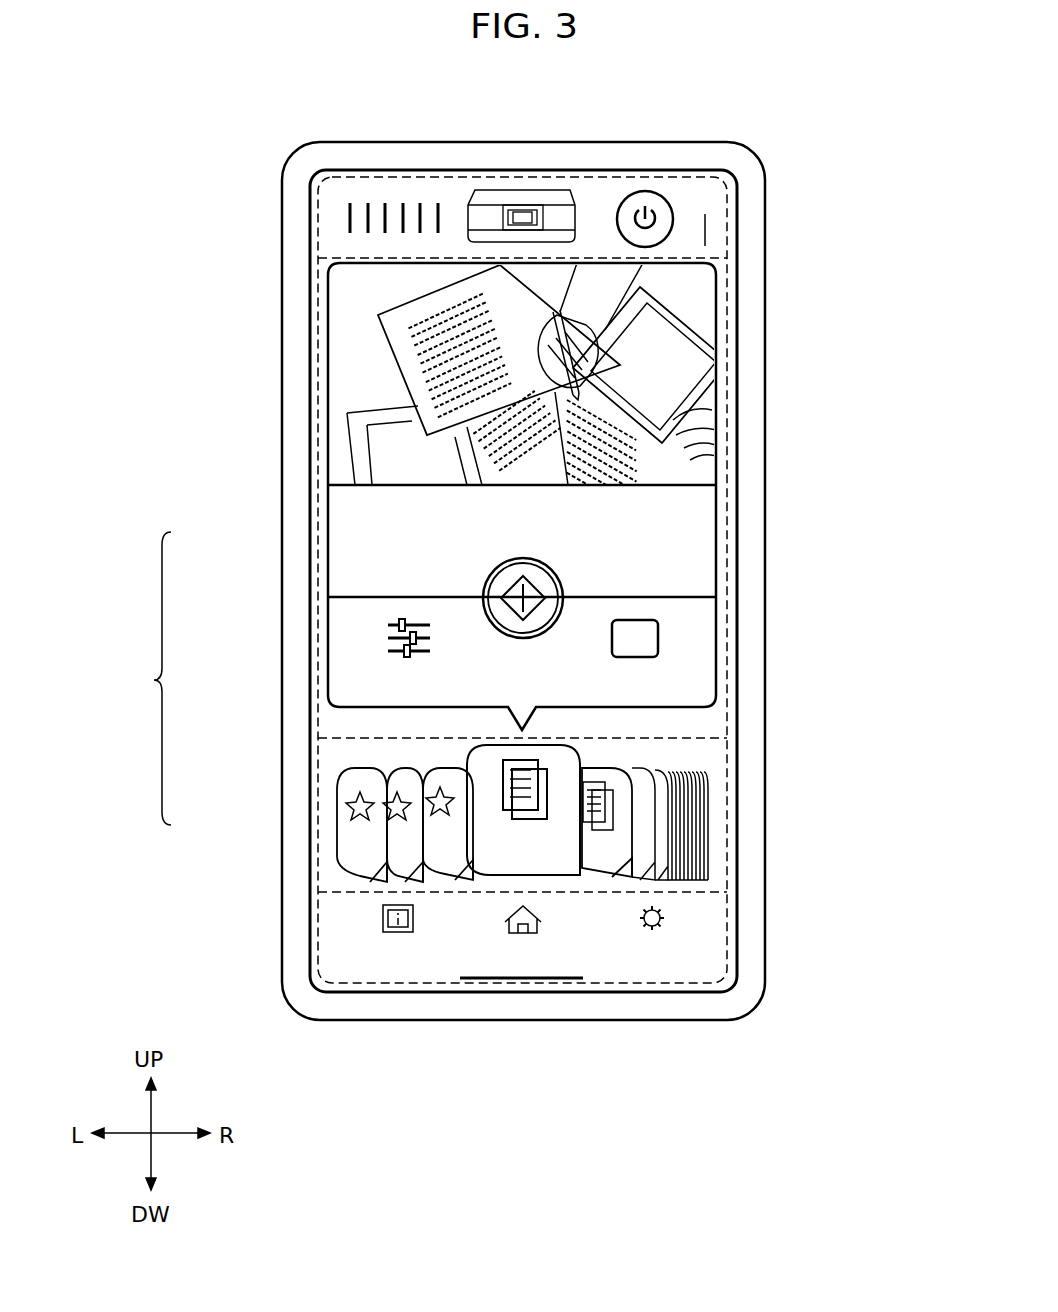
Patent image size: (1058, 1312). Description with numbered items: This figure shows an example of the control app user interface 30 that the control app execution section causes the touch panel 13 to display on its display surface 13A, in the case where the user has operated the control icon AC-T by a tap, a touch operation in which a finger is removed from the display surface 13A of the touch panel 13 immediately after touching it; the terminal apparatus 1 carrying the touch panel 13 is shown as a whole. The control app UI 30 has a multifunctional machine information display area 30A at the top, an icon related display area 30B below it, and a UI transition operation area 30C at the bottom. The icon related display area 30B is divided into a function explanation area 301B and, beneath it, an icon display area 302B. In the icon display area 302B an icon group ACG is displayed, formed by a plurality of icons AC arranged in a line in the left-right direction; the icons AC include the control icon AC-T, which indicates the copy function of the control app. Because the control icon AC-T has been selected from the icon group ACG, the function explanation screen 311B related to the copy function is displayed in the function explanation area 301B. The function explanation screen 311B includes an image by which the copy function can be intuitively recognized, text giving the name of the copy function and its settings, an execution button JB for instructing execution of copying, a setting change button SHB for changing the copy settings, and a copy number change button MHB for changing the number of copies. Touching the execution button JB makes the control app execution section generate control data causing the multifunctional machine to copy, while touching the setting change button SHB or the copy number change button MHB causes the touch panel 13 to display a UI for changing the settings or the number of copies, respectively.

The printer / image processing apparatus 1 is at (557, 141).
The touch panel 13 is at (652, 169).
The display surface 13A is at (706, 230).
The control app user interface 30 is at (710, 193).
The multifunctional machine information display area 30A is at (328, 205).
The icon related display area 30B is at (135, 678).
The UI transition operation area 30C is at (330, 922).
The function explanation area 301B is at (328, 517).
The icon display area 302B is at (328, 752).
The function explanation screen 311B is at (688, 513).
The execution button JB is at (561, 577).
The copy number change button MHB is at (659, 640).
The setting change button SHB is at (387, 640).
The icon AC is at (430, 780).
The control icon AC-T is at (560, 853).
The icon group ACG is at (708, 780).